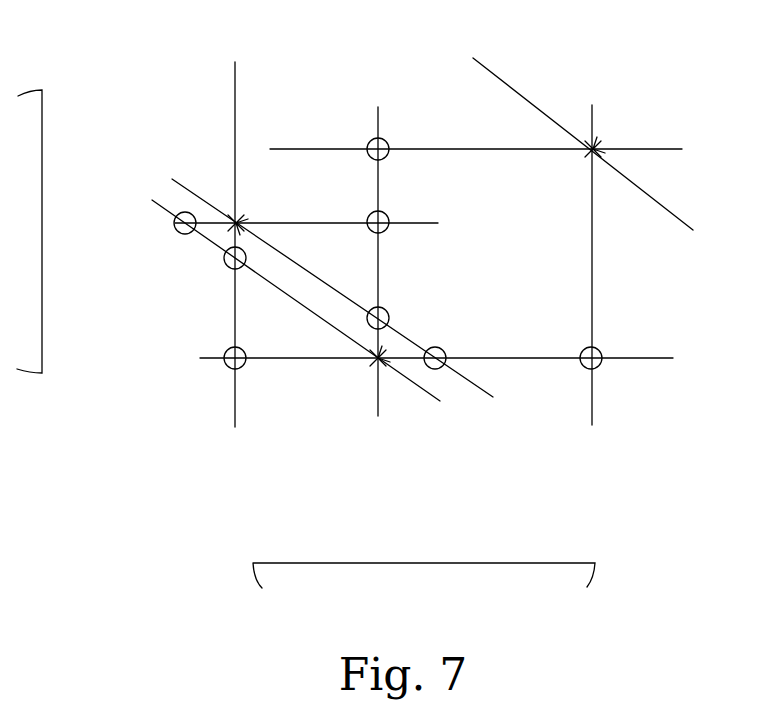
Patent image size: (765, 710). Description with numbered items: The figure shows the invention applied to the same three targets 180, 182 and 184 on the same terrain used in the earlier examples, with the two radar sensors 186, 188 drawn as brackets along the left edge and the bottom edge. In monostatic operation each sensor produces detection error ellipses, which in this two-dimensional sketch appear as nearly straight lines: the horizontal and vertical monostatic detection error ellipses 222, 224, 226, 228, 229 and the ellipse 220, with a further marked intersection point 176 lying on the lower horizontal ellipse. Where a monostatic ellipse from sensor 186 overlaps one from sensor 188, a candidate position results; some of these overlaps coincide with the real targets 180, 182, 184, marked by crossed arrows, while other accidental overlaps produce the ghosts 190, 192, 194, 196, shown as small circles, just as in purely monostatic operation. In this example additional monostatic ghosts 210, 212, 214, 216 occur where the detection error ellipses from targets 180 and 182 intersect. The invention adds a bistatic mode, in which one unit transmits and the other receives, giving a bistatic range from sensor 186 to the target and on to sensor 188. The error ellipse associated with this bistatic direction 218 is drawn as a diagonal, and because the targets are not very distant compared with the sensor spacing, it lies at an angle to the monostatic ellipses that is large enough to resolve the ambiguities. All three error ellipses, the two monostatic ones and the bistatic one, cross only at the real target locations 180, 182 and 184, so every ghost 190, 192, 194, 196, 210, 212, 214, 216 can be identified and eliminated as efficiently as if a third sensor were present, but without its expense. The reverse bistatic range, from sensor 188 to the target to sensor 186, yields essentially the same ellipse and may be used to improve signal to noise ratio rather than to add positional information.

The conductive trace 176 is at (447, 348).
The target 180 is at (240, 221).
The target 182 is at (383, 363).
The target 184 is at (596, 146).
The sensor 186 is at (42, 372).
The sensor 188 is at (253, 563).
The ghost 190 is at (243, 366).
The ghost 192 is at (386, 229).
The ghost 194 is at (386, 155).
The ghost 196 is at (600, 350).
The monostatic ghost 210 is at (180, 233).
The monostatic ghost 212 is at (227, 267).
The monostatic ghost 214 is at (390, 308).
The monostatic ghost 216 is at (152, 200).
The bistatic error ellipse 218 is at (172, 179).
The error ellipse 220 is at (473, 58).
The monostatic detection error ellipse 222 is at (438, 223).
The monostatic detection error ellipse 224 is at (512, 148).
The monostatic detection error ellipse 226 is at (235, 408).
The monostatic detection error ellipse 228 is at (375, 398).
The monostatic detection error ellipse 229 is at (592, 250).